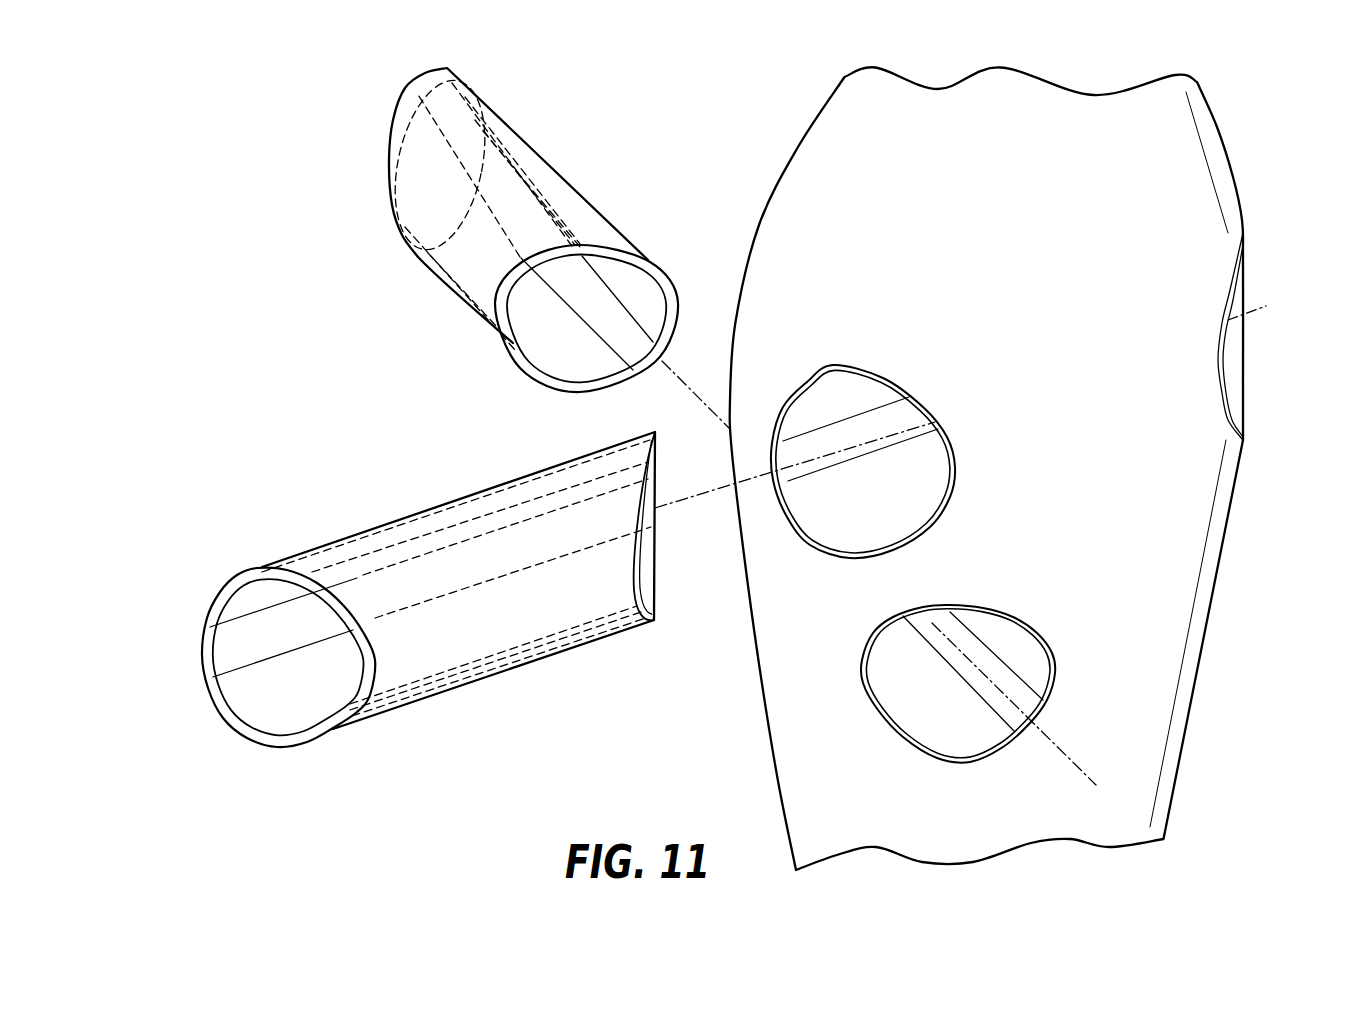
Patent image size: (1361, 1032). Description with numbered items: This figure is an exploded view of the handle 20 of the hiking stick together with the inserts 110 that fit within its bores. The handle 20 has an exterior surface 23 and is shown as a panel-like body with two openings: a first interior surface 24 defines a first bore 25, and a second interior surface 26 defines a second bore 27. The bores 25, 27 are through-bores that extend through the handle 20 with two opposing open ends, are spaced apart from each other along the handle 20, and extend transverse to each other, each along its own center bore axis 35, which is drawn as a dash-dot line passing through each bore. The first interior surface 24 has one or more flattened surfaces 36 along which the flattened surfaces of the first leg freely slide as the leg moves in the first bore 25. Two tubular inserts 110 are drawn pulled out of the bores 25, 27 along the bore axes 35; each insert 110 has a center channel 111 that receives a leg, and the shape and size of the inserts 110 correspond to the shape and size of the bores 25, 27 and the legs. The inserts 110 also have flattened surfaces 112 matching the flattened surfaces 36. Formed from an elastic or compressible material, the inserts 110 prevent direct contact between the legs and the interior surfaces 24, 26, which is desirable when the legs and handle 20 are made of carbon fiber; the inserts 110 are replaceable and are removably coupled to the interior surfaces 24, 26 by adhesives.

The handle 20 is at (1185, 164).
The exterior surface 23 is at (1167, 658).
The first interior surface 24 is at (829, 521).
The first bore 25 is at (1248, 369).
The second interior surface 26 is at (887, 662).
The second bore 27 is at (903, 695).
The center bore axis 35 is at (711, 494).
The flattened surface 36 is at (876, 427).
The insert 110 is at (553, 208).
The center channel 111 is at (628, 281).
The flattened surface 112 is at (627, 337).